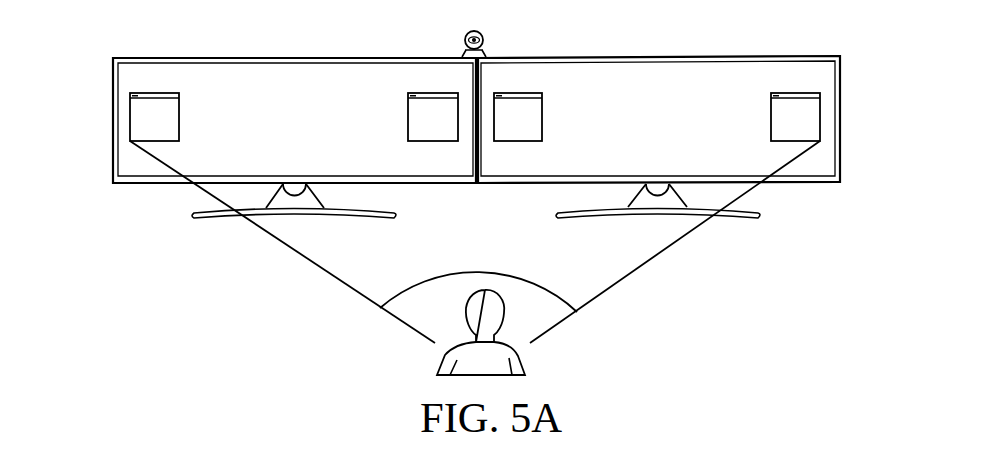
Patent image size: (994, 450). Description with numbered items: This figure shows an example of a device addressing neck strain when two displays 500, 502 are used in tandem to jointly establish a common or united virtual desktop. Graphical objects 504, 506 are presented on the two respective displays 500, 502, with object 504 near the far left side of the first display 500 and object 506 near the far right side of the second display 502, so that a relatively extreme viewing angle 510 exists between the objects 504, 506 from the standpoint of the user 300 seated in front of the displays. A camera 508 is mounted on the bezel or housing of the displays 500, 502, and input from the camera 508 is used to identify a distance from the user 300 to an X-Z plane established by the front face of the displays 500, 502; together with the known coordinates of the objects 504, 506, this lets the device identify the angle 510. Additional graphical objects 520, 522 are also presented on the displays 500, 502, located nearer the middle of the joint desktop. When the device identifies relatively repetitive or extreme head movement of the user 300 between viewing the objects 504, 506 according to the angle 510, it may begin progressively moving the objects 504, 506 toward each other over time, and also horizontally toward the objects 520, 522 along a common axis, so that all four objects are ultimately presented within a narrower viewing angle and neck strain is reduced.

The display 500 is at (212, 57).
The display 502 is at (755, 57).
The graphical object 504 is at (138, 117).
The graphical object 506 is at (810, 111).
The camera 508 is at (484, 36).
The viewing angle 510 is at (475, 272).
The additional graphical object 520 is at (423, 100).
The additional graphical object 522 is at (505, 97).
The user 300 is at (520, 353).